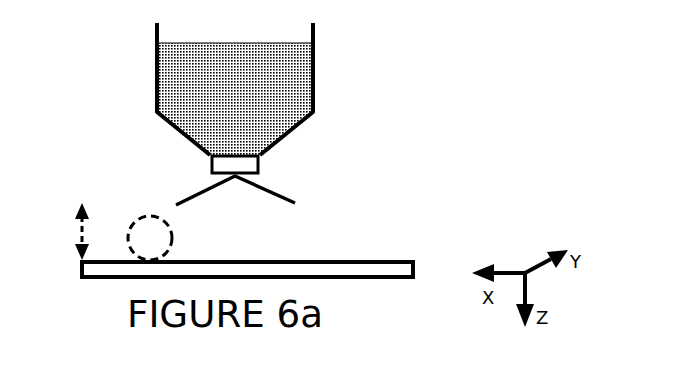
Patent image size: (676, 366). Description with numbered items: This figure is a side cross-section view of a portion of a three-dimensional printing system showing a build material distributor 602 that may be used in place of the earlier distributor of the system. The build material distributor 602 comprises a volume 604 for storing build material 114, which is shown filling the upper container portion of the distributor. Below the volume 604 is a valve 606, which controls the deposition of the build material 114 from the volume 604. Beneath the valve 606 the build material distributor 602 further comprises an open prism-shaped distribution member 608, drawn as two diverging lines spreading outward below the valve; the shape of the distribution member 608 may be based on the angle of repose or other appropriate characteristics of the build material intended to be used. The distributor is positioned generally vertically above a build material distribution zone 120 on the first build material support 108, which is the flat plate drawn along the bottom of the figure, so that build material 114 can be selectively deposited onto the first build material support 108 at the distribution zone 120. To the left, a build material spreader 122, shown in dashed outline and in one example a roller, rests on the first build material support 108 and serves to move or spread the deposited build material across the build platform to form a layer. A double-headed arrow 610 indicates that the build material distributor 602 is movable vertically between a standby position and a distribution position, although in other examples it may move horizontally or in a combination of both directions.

The build material 114 is at (172, 93).
The volume 604 is at (253, 38).
The build material distributor 602 is at (313, 79).
The valve 606 is at (260, 165).
The distribution member 608 is at (196, 195).
The arrow 610 is at (75, 228).
The build material spreader 122 is at (157, 215).
The build material distribution zone 120 is at (240, 243).
The first build material support 108 is at (365, 260).